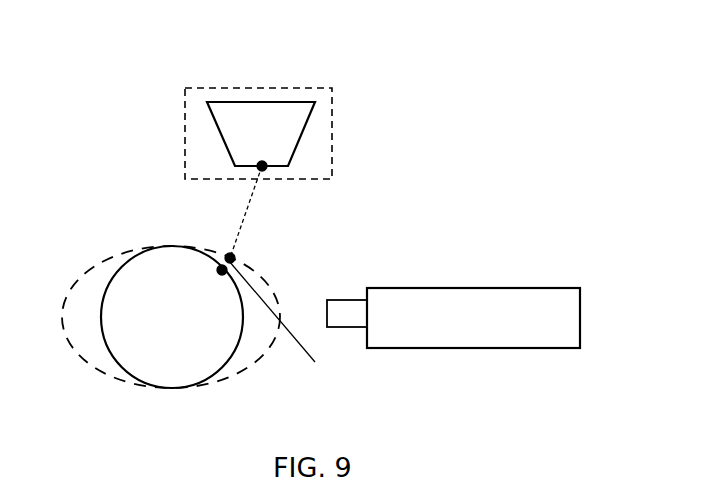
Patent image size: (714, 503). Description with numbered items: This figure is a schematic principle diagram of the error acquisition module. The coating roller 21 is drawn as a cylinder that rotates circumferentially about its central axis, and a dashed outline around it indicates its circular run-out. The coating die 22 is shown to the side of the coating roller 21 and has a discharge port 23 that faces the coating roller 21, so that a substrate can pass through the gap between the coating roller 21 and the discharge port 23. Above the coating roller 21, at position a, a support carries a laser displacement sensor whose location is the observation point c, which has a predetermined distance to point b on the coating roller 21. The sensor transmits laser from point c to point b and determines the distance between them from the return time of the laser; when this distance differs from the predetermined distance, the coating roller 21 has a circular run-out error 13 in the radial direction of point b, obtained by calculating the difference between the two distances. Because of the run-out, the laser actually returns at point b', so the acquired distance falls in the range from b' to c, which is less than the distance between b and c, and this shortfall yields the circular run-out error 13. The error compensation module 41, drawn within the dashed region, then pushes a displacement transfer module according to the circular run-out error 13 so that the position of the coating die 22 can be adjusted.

The error compensation module 41 is at (281, 90).
The position a is at (185, 88).
The point b is at (192, 226).
The point b' is at (260, 214).
The observation point c is at (262, 166).
The coating roller 21 is at (153, 277).
The circular run-out error 13 is at (282, 319).
The coating die 22 is at (440, 301).
The discharge port 23 is at (350, 291).